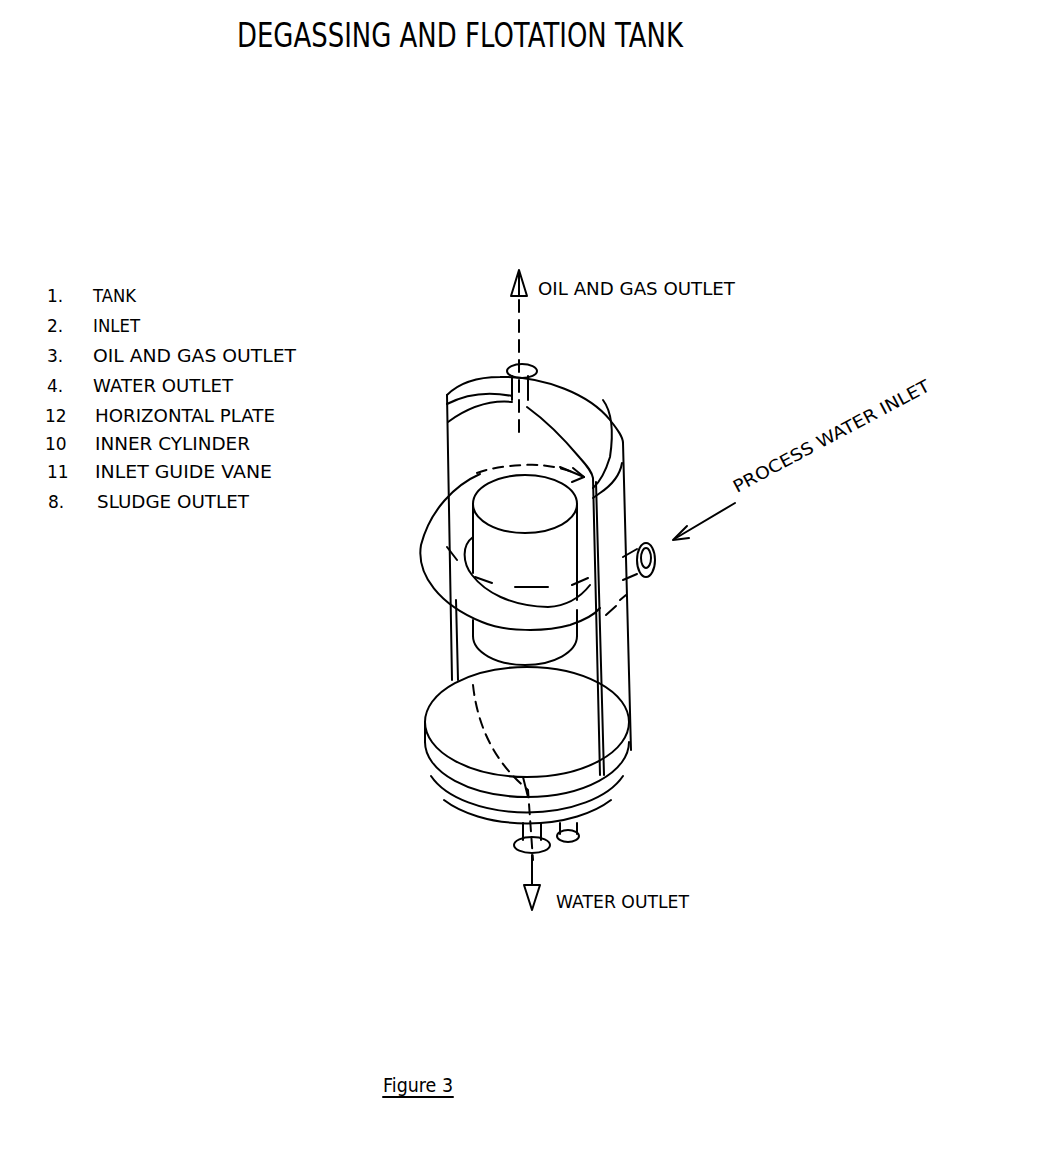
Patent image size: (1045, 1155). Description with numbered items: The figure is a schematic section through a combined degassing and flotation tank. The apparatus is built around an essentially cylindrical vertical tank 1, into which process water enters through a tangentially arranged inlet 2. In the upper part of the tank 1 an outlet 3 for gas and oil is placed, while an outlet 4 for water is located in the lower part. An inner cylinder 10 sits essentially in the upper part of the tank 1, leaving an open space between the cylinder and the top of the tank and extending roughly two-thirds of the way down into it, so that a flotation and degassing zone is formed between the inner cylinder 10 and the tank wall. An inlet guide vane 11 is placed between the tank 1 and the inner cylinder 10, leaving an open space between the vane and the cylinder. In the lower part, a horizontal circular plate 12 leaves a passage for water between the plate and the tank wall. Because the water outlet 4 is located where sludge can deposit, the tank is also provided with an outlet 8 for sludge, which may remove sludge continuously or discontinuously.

The tank 1 is at (448, 447).
The inlet 2 is at (655, 570).
The outlet for gas and oil 3 is at (535, 372).
The outlet for water 4 is at (512, 842).
The outlet for sludge 8 is at (578, 832).
The inner cylinder 10 is at (473, 512).
The inlet guide vane 11 is at (428, 580).
The horizontal circular plate 12 is at (570, 775).